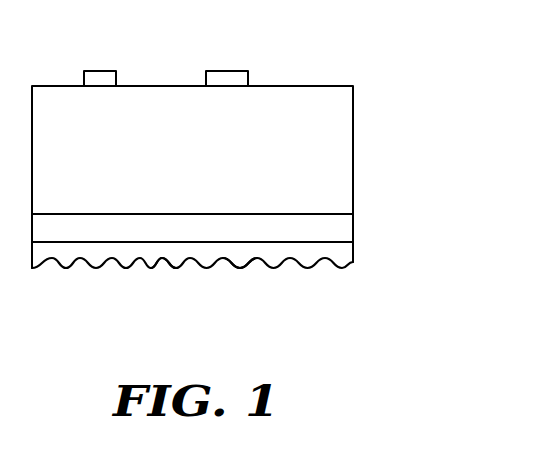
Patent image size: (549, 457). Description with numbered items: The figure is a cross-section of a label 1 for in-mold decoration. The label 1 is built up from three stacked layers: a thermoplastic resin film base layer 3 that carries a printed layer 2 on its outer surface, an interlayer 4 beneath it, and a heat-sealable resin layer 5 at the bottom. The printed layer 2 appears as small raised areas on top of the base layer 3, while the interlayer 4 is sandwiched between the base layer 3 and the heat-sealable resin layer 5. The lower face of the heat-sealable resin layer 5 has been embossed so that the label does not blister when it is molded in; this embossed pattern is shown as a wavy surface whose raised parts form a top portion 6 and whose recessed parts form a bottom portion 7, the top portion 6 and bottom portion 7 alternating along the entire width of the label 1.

The label 1 is at (227, 170).
The printed layer 2 is at (233, 73).
The substrate / upper layer 3 is at (332, 136).
The intermediate layer 4 is at (332, 225).
The lower layer with corrugated surface 5 is at (343, 256).
The top portion 6 is at (242, 270).
The bottom portion 7 is at (157, 259).